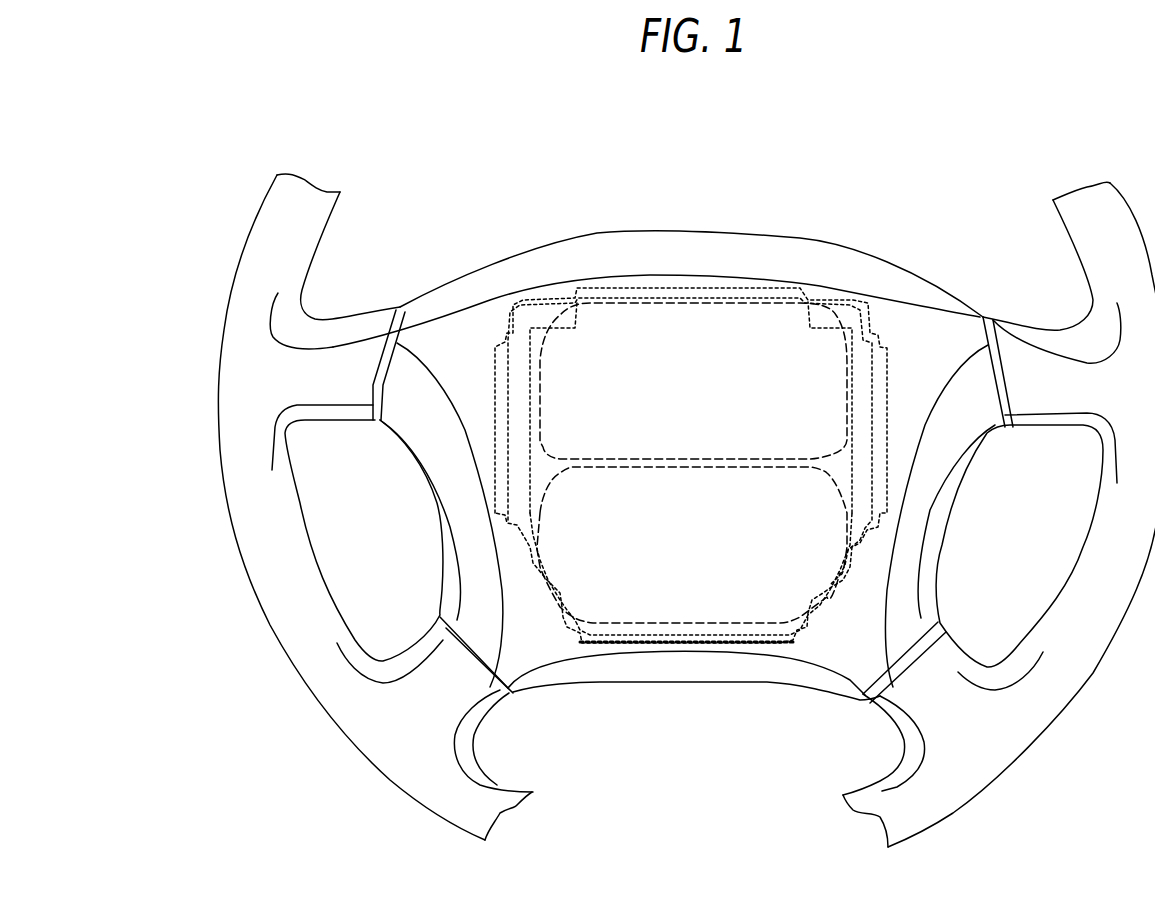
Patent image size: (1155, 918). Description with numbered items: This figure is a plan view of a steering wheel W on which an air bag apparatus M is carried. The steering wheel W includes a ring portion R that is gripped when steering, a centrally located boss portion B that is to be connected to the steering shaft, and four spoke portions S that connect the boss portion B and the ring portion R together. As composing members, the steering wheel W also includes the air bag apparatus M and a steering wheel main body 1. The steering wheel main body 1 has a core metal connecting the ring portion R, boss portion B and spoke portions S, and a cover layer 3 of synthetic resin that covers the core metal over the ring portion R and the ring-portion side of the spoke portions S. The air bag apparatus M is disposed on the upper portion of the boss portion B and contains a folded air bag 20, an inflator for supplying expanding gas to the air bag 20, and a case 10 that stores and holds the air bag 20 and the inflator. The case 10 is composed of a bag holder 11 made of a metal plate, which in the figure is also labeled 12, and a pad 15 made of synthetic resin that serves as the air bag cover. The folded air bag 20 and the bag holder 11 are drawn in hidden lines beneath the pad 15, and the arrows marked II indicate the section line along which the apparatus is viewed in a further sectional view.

The steering wheel W is at (230, 226).
The ring portion R is at (317, 220).
The spoke portions S is at (352, 293).
The boss portion B is at (770, 688).
The air bag apparatus M is at (632, 647).
The steering wheel main body 1 is at (395, 750).
The cover layer 3 is at (262, 566).
The case 10 is at (603, 178).
The bag holder 11 is at (542, 335).
The door portion 12 is at (690, 466).
The pad 15 is at (483, 333).
The air bag 20 is at (693, 325).
The section line II is at (408, 485).